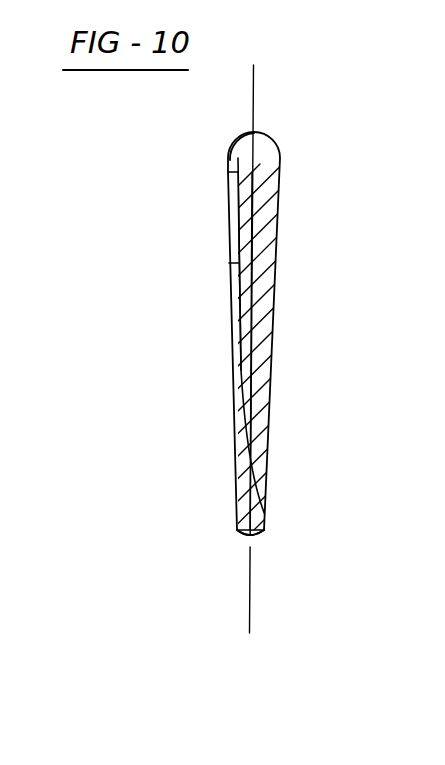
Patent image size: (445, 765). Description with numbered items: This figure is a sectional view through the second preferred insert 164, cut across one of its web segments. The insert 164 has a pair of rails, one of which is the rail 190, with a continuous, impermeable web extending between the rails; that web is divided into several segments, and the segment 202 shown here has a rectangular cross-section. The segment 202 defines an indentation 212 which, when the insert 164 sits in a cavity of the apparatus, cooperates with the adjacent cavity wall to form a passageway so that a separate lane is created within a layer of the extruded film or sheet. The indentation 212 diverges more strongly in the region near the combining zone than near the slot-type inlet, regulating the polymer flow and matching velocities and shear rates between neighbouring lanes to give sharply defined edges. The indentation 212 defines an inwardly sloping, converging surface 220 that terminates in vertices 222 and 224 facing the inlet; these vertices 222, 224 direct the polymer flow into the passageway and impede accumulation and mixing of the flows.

The second preferred insert 164 is at (292, 191).
The rail 190 is at (238, 536).
The segment 202 is at (274, 318).
The indentation 212 is at (248, 387).
The converging surface 220 is at (231, 243).
The vertex 222 is at (233, 160).
The vertex 224 is at (327, 113).